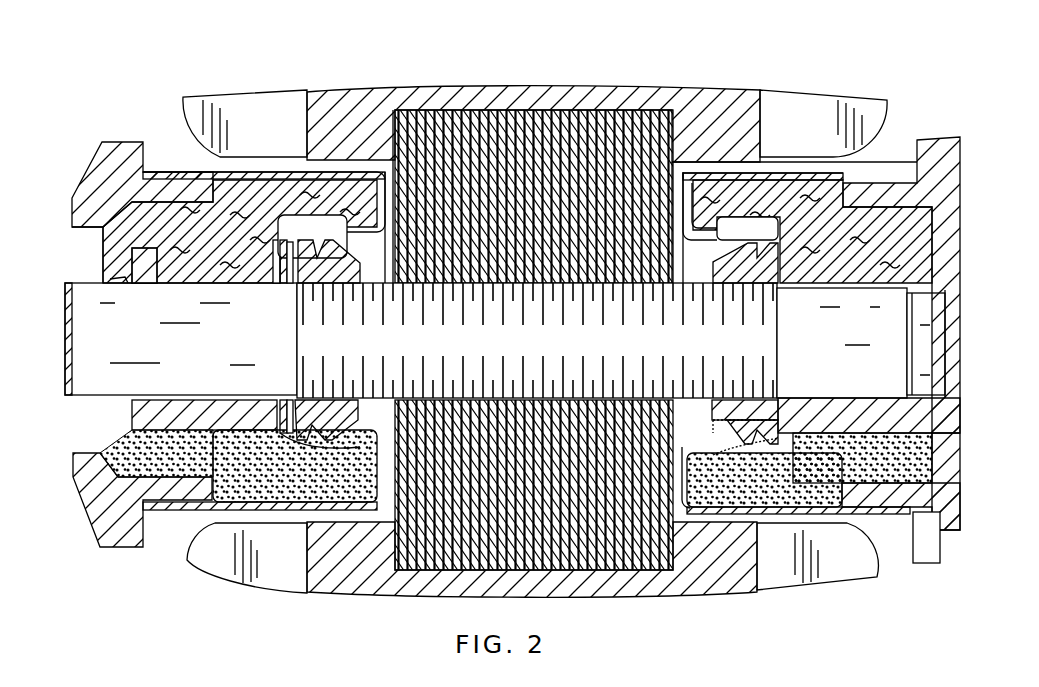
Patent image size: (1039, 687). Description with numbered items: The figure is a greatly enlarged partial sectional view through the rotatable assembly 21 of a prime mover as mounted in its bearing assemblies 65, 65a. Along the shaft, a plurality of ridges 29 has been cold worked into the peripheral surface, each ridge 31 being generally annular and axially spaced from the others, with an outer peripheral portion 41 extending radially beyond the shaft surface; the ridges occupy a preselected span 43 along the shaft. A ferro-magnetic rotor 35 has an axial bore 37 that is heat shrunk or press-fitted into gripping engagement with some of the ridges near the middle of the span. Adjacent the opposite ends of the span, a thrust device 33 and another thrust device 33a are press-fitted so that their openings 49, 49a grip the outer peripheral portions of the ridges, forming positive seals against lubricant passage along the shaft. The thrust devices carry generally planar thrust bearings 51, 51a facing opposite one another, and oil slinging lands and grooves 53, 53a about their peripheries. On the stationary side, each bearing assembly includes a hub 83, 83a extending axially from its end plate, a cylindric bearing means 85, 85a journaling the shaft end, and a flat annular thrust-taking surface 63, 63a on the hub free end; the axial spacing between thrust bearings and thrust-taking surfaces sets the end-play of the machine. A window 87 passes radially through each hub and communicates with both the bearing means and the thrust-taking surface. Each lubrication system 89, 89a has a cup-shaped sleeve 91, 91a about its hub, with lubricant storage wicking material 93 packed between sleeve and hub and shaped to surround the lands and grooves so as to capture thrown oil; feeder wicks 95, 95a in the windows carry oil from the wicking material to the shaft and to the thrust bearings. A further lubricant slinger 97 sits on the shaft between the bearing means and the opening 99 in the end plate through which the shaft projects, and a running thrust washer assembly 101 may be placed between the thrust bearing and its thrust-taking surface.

The rotatable assembly 21 is at (616, 76).
The plurality of ridges 29 is at (496, 411).
The ridges 31 is at (566, 400).
The thrust device 33 is at (385, 272).
The thrust device 33a is at (680, 276).
The rotor 35 is at (654, 110).
The axial bore 37 is at (489, 283).
The outer peripheral portion 41 is at (572, 286).
The span 43 is at (530, 337).
The opening 49 is at (346, 287).
The opening 49a is at (704, 287).
The thrust bearing 51 is at (312, 240).
The thrust bearing 51a is at (745, 235).
The oil slinging lands and grooves 53 is at (305, 437).
The oil slinging lands and grooves 53a is at (740, 446).
The thrust-taking surface 63 is at (266, 430).
The thrust-taking surface 63a is at (787, 445).
The bearing assembly 65 is at (176, 382).
The bearing assembly 65a is at (811, 382).
The hub 83 is at (184, 438).
The hub 83a is at (894, 424).
The bearing means 85 is at (225, 385).
The bearing means 85a is at (826, 392).
The window 87 is at (190, 235).
The lubrication system 89 is at (188, 517).
The lubrication system 89a is at (856, 516).
The sleeve 91 is at (202, 523).
The sleeve 91a is at (758, 521).
The lubricant storage wicking material 93 is at (275, 516).
The feeder wick 95 is at (258, 195).
The feeder wick 95a is at (814, 195).
The lubricant slinger 97 is at (118, 284).
The opening 99 is at (73, 455).
The running thrust washer assembly 101 is at (276, 272).